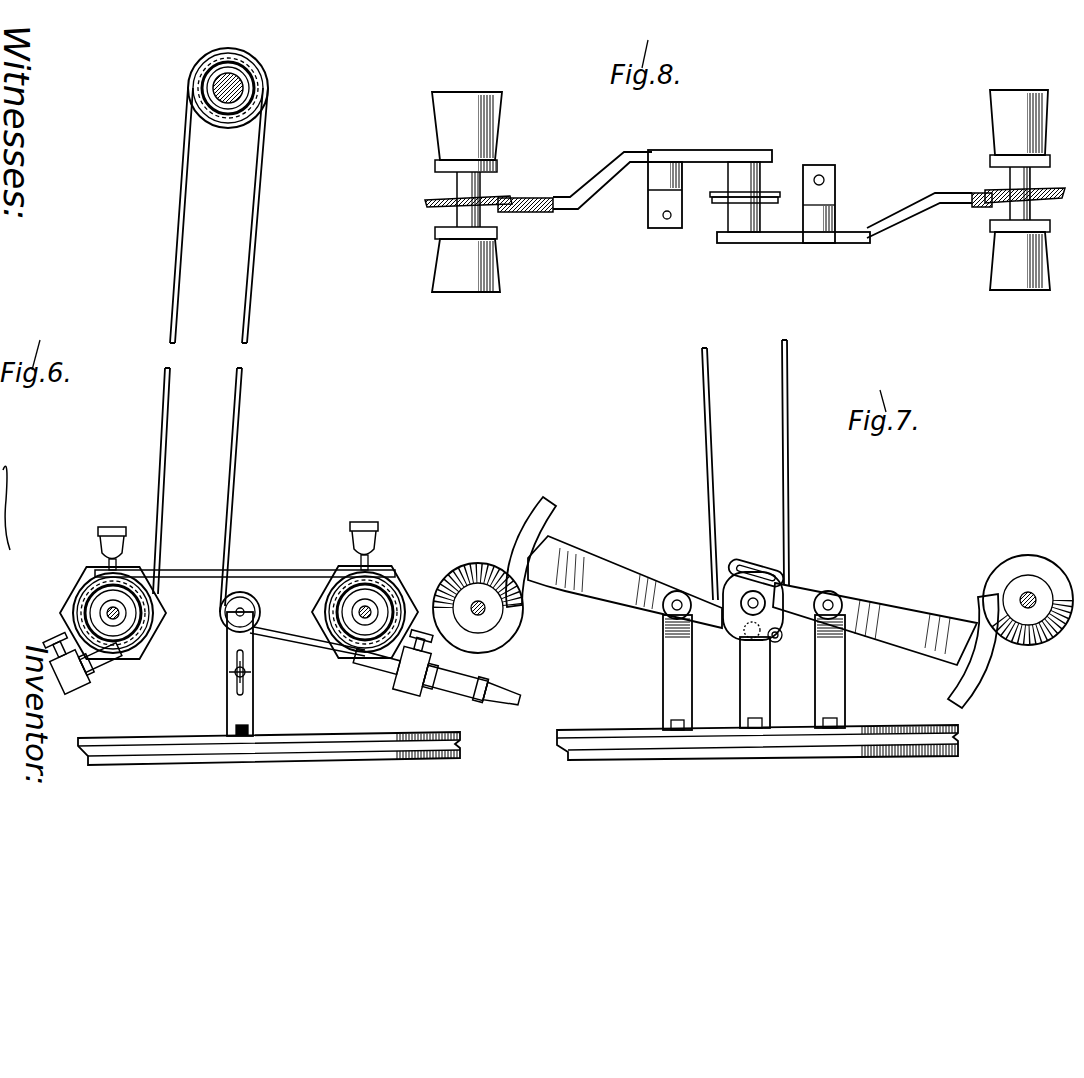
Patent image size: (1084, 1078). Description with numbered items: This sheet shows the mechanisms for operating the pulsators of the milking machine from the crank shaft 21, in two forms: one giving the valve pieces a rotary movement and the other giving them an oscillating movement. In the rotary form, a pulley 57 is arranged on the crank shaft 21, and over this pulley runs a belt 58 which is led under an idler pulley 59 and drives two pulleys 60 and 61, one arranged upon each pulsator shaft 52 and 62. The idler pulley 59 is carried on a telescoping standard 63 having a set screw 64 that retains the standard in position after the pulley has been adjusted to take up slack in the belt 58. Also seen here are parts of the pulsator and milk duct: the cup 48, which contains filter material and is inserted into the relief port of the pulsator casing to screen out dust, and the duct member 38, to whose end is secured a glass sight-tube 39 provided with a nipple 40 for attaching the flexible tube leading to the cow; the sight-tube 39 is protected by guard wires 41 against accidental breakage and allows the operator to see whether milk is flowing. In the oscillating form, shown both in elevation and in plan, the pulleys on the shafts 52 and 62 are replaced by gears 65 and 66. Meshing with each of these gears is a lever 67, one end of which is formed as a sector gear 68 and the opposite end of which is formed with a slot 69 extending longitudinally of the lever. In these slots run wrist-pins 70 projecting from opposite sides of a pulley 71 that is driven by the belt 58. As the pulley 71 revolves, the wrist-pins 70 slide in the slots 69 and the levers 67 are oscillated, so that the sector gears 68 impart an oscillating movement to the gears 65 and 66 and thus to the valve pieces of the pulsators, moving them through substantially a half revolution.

In FIG. 6, the crank shaft 21 is at (229, 100).
In FIG. 6, the member 38 is at (398, 668).
In FIG. 6, the glass sight-tube 39 is at (466, 686).
In FIG. 6, the nipple 40 is at (498, 702).
In FIG. 6, the guard wires 41 is at (452, 699).
In FIG. 6, the cup 48 is at (364, 521).
In FIG. 6, the shaft 52 is at (368, 608).
In FIG. 7, the shaft 52 is at (1030, 594).
In FIG. 8, the shaft 52 is at (1010, 178).
In FIG. 6, the pulley 57 is at (256, 76).
In FIG. 6, the belt 58 is at (260, 218).
In FIG. 7, the belt 58 is at (790, 352).
In FIG. 6, the idler pulley 59 is at (256, 607).
In FIG. 6, the pulley 60 is at (384, 600).
In FIG. 6, the pulley 61 is at (92, 602).
In FIG. 6, the pulsator shaft 62 is at (122, 614).
In FIG. 7, the pulsator shaft 62 is at (479, 600).
In FIG. 8, the pulsator shaft 62 is at (457, 182).
In FIG. 6, the telescoping standard 63 is at (227, 660).
In FIG. 6, the set screw 64 is at (251, 672).
In FIG. 7, the gear 65 is at (1040, 645).
In FIG. 8, the gear 65 is at (1000, 206).
In FIG. 7, the gear 66 is at (488, 612).
In FIG. 8, the gear 66 is at (432, 205).
In FIG. 7, the lever 67 is at (897, 620).
In FIG. 8, the lever 67 is at (896, 218).
In FIG. 7, the sector gear 68 is at (968, 678).
In FIG. 8, the sector gear 68 is at (990, 196).
In FIG. 7, the slot 69 is at (738, 570).
In FIG. 7, the wrist-pins 70 is at (730, 642).
In FIG. 8, the wrist-pins 70 is at (745, 245).
In FIG. 7, the pulley 71 is at (782, 630).
In FIG. 8, the pulley 71 is at (765, 193).